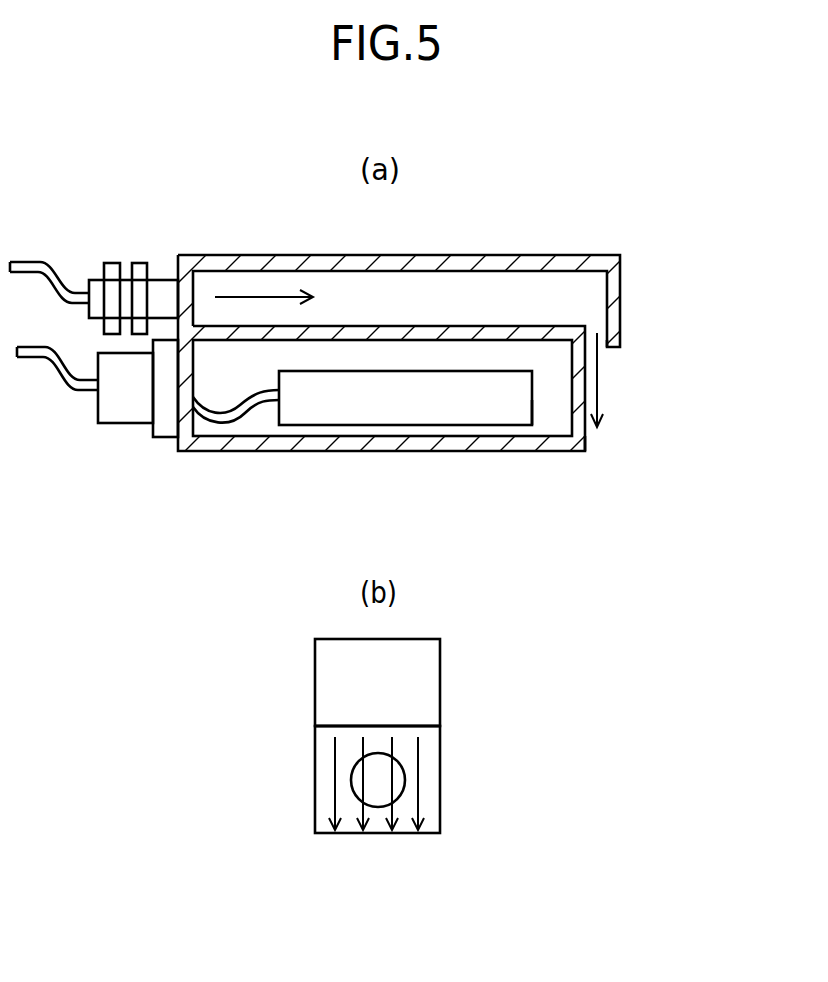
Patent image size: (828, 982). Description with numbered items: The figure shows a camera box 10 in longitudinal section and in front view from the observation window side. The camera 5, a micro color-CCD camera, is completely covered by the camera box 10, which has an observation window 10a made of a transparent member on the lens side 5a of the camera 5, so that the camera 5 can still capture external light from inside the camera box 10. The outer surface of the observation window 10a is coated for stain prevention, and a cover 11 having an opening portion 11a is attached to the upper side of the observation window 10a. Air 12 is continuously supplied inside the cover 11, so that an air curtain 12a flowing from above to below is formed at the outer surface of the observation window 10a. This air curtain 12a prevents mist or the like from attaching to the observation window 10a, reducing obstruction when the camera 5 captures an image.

The camera 5 is at (393, 412).
The lens side 5a is at (532, 405).
The camera box 10 is at (482, 443).
The observation window 10a is at (593, 437).
The cover 11 is at (457, 263).
The opening portion 11a is at (598, 345).
The air 12 is at (245, 298).
The air curtain 12a is at (595, 392).